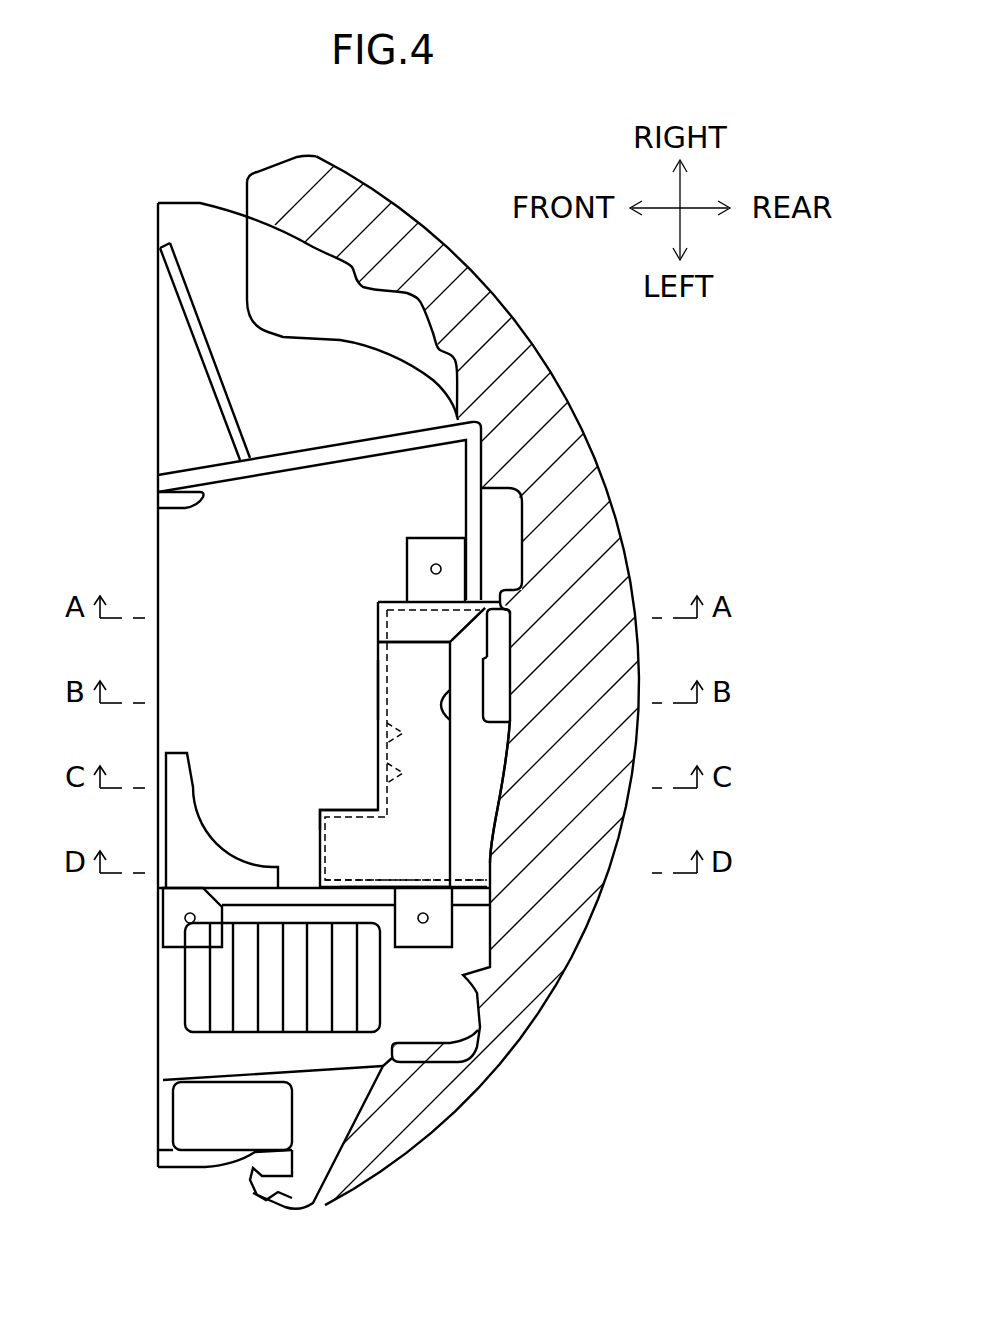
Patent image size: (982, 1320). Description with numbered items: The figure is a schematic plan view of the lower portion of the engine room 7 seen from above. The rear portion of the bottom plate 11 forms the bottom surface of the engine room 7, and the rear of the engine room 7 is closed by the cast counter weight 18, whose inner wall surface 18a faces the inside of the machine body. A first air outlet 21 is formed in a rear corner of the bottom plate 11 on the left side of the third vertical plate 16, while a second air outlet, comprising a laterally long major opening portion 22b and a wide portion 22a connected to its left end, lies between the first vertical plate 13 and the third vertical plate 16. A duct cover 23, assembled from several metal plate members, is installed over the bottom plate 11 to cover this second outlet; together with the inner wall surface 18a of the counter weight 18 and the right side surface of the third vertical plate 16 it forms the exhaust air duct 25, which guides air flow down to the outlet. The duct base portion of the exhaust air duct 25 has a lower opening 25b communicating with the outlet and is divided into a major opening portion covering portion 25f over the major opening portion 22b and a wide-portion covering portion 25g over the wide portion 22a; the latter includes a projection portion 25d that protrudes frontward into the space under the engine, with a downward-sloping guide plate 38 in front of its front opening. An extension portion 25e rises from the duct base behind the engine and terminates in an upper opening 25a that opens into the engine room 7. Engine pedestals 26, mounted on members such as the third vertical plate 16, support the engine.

The engine room 7 is at (348, 380).
The bottom plate 11 is at (158, 393).
The first vertical plate 13 is at (158, 508).
The third vertical plate 16 is at (275, 910).
The counter weight 18 is at (527, 343).
The inner wall surface 18a is at (493, 755).
The first air outlet 21 is at (200, 1030).
The wide portion 22a is at (380, 880).
The major opening portion 22b is at (387, 727).
The duct cover 23 is at (400, 670).
The exhaust air duct 25 is at (502, 735).
The upper opening 25a is at (466, 644).
The lower opening 25b is at (387, 765).
The projection portion 25d is at (345, 822).
The extension portion 25e is at (447, 690).
The major opening portion covering portion 25f is at (400, 698).
The wide-portion covering portion 25g is at (390, 840).
The engine pedestal 26 is at (436, 562).
The guide plate 38 is at (182, 785).